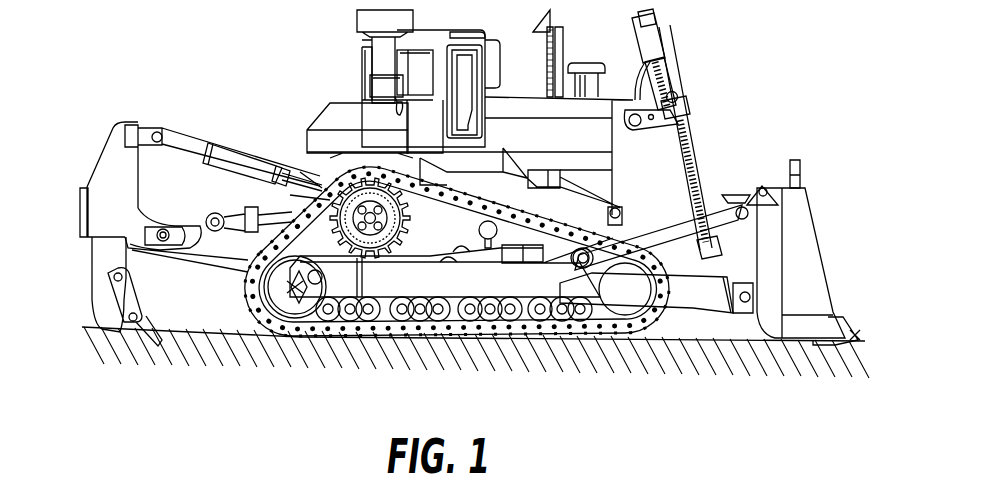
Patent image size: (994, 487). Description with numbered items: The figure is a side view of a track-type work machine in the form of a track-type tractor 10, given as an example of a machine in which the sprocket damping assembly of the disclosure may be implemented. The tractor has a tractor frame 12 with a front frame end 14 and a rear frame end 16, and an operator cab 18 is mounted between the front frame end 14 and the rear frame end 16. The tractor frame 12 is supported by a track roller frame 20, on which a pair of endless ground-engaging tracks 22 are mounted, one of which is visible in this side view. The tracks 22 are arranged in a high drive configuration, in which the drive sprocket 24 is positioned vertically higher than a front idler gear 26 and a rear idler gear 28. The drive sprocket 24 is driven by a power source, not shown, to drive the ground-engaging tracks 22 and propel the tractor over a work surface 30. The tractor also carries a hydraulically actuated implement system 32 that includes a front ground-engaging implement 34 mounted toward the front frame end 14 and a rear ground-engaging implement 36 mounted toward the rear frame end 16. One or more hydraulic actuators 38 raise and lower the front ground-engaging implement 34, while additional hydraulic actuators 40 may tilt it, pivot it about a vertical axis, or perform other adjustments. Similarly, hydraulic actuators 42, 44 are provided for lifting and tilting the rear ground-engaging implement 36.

The track-type tractor 10 is at (730, 40).
The tractor frame 12 is at (337, 100).
The front frame end 14 is at (685, 203).
The rear frame end 16 is at (303, 130).
The operator cab 18 is at (357, 22).
The track roller frame 20 is at (352, 289).
The ground-engaging tracks 22 is at (541, 340).
The drive sprocket 24 is at (385, 218).
The front idler gear 26 is at (650, 322).
The rear idler gear 28 is at (268, 287).
The work surface 30 is at (88, 318).
The hydraulically actuated implement system 32 is at (704, 150).
The front ground-engaging implement 34 is at (822, 253).
The rear ground-engaging implement 36 is at (104, 254).
The hydraulic actuators 38 is at (680, 120).
The hydraulic actuators 40 is at (672, 232).
The hydraulic actuator 42 is at (242, 160).
The hydraulic actuator 44 is at (268, 207).